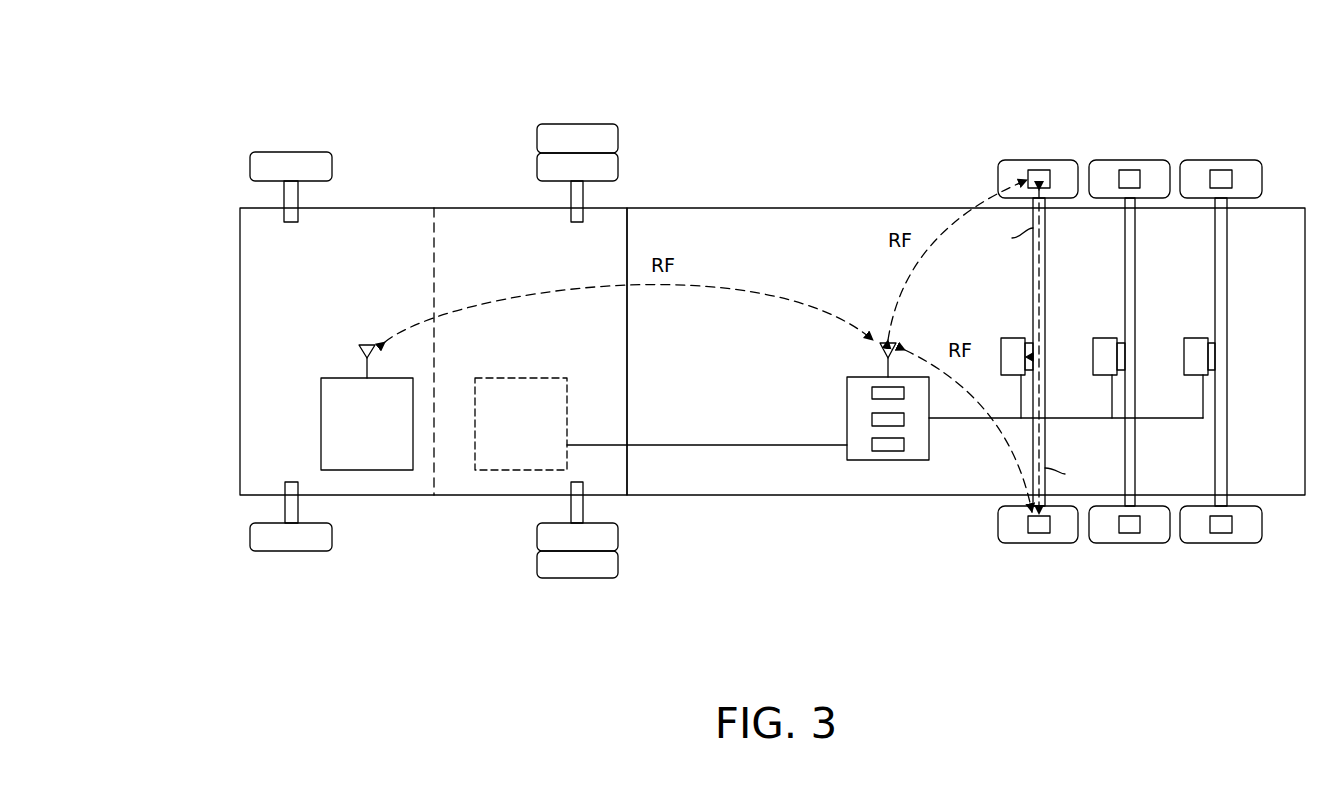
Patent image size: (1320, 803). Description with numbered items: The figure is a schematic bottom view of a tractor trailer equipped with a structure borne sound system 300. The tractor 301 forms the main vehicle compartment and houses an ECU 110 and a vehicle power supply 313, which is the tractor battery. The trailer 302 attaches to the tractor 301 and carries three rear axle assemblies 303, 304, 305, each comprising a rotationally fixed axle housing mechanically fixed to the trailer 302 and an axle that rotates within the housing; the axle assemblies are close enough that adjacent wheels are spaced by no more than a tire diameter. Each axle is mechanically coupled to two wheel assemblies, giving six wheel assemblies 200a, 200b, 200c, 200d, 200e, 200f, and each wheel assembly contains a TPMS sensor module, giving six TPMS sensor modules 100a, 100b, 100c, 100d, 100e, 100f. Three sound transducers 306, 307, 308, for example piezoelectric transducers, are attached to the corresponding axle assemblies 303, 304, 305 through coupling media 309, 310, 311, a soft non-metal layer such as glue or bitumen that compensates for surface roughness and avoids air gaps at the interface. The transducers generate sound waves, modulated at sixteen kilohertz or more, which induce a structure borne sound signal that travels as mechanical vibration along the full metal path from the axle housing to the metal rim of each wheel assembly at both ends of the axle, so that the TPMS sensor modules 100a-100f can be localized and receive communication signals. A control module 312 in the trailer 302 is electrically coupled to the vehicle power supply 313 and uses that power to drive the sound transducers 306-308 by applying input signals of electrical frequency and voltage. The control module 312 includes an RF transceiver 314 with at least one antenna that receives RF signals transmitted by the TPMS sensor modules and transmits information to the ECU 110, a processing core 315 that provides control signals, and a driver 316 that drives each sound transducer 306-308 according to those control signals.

The structure borne sound system 300 is at (238, 66).
The tractor 301 is at (240, 357).
The trailer 302 is at (730, 495).
The ECU 110 is at (341, 378).
The vehicle power supply 313 is at (530, 378).
The control module 312 is at (888, 460).
The RF transceiver 314 is at (872, 393).
The processing core 315 is at (872, 419).
The driver 316 is at (904, 444).
The rear axle assembly 303 is at (1045, 440).
The rear axle assembly 304 is at (1135, 440).
The rear axle assembly 305 is at (1227, 440).
The sound transducer 306 is at (1008, 338).
The sound transducer 307 is at (1100, 338).
The sound transducer 308 is at (1192, 338).
The coupling media 309 is at (1028, 343).
The coupling media 310 is at (1120, 343).
The coupling media 311 is at (1211, 343).
The TPMS sensor module 100a is at (1038, 170).
The TPMS sensor module 100b is at (1038, 533).
The TPMS sensor module 100c is at (1128, 170).
The TPMS sensor module 100d is at (1128, 533).
The TPMS sensor module 100e is at (1220, 170).
The TPMS sensor module 100f is at (1220, 533).
The wheel assembly 200a is at (1062, 160).
The wheel assembly 200b is at (1062, 543).
The wheel assembly 200c is at (1152, 160).
The wheel assembly 200d is at (1152, 543).
The wheel assembly 200e is at (1242, 160).
The wheel assembly 200f is at (1242, 543).